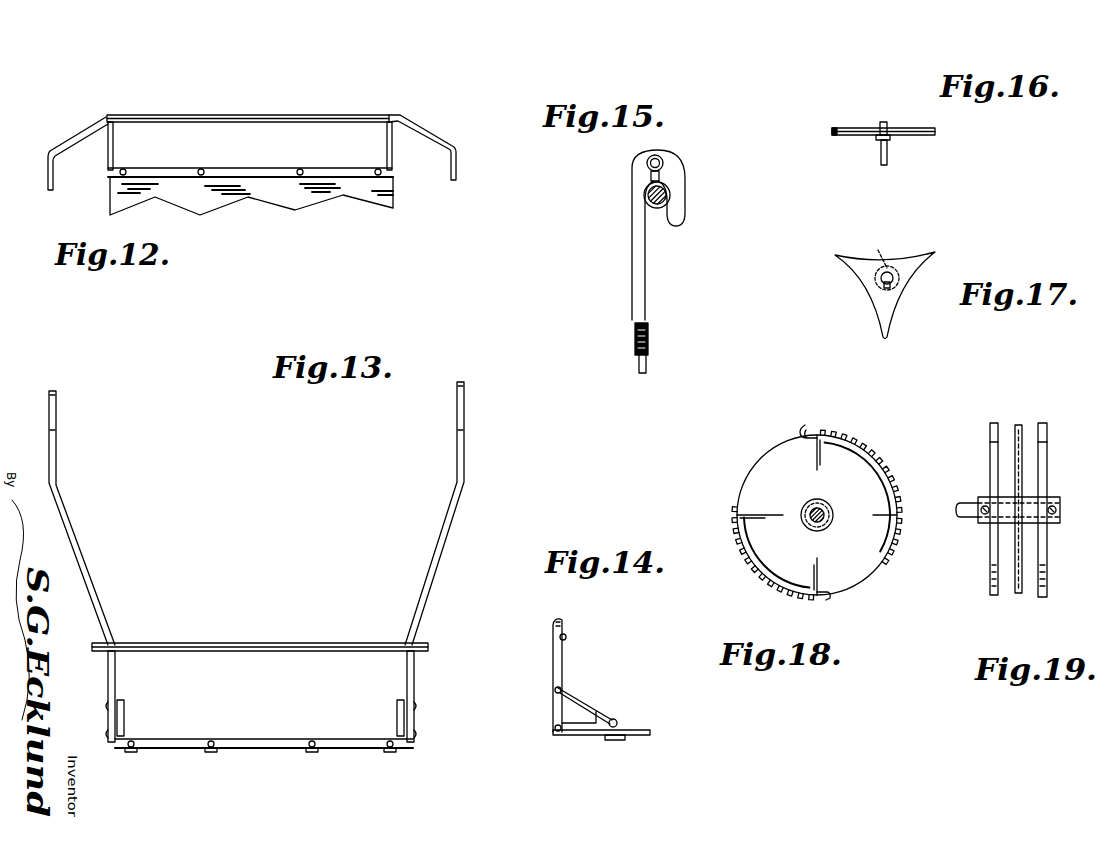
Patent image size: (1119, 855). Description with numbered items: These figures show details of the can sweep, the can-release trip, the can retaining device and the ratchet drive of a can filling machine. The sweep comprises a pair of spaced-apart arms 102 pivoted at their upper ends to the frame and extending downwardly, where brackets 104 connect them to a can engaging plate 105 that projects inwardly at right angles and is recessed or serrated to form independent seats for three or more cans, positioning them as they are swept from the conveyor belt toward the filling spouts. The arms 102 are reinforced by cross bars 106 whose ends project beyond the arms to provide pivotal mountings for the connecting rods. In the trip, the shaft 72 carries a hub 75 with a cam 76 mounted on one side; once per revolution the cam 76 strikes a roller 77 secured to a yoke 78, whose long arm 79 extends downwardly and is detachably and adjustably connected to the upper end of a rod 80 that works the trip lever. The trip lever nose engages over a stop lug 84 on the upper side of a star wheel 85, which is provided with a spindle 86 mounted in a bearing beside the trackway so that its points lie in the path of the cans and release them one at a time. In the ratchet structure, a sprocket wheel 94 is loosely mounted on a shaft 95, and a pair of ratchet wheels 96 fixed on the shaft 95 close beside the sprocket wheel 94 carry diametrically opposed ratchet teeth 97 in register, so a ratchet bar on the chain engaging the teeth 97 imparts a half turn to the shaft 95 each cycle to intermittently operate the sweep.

In FIG. 15, the shaft 72 is at (658, 206).
In FIG. 15, the hub 75 is at (671, 195).
In FIG. 15, the cam 76 is at (661, 178).
In FIG. 15, the roller 77 is at (661, 160).
In FIG. 15, the yoke 78 is at (641, 168).
In FIG. 15, the long arm 79 is at (631, 258).
In FIG. 15, the rod 80 is at (638, 364).
In FIG. 16, the stop lug 84 is at (887, 128).
In FIG. 17, the stop lug 84 is at (892, 290).
In FIG. 16, the star wheel 85 is at (856, 127).
In FIG. 17, the star wheel 85 is at (868, 300).
In FIG. 16, the spindle 86 is at (880, 160).
In FIG. 17, the spindle 86 is at (874, 259).
In FIG. 18, the sprocket wheel 94 is at (882, 463).
In FIG. 19, the sprocket wheel 94 is at (1019, 428).
In FIG. 18, the shaft 95 is at (831, 512).
In FIG. 19, the shaft 95 is at (965, 518).
In FIG. 18, the ratchet wheel 96 is at (865, 565).
In FIG. 19, the ratchet wheel 96 is at (990, 478).
In FIG. 18, the ratchet teeth 97 is at (798, 428).
In FIG. 19, the ratchet teeth 97 is at (992, 432).
In FIG. 12, the arm 102 is at (80, 135).
In FIG. 13, the arm 102 is at (73, 527).
In FIG. 14, the arm 102 is at (555, 622).
In FIG. 12, the bracket 104 is at (125, 152).
In FIG. 13, the bracket 104 is at (119, 723).
In FIG. 14, the bracket 104 is at (595, 716).
In FIG. 12, the can engaging plate 105 is at (270, 193).
In FIG. 13, the can engaging plate 105 is at (268, 748).
In FIG. 14, the can engaging plate 105 is at (640, 736).
In FIG. 12, the cross bar 106 is at (202, 103).
In FIG. 13, the cross bar 106 is at (253, 643).
In FIG. 14, the cross bar 106 is at (565, 640).